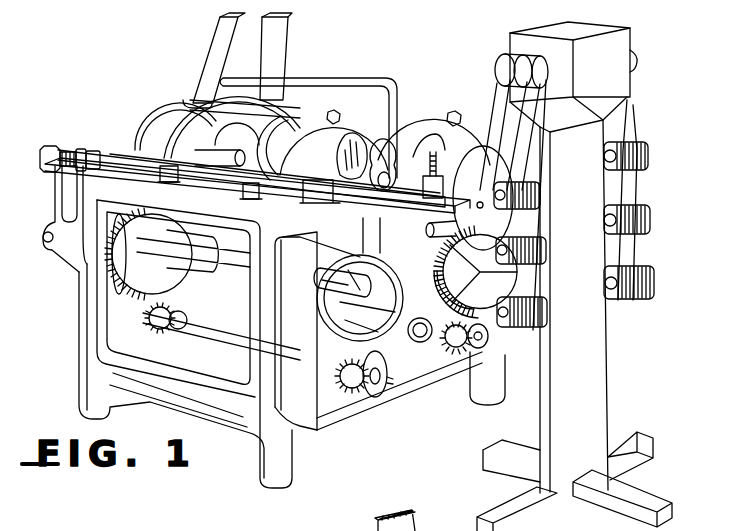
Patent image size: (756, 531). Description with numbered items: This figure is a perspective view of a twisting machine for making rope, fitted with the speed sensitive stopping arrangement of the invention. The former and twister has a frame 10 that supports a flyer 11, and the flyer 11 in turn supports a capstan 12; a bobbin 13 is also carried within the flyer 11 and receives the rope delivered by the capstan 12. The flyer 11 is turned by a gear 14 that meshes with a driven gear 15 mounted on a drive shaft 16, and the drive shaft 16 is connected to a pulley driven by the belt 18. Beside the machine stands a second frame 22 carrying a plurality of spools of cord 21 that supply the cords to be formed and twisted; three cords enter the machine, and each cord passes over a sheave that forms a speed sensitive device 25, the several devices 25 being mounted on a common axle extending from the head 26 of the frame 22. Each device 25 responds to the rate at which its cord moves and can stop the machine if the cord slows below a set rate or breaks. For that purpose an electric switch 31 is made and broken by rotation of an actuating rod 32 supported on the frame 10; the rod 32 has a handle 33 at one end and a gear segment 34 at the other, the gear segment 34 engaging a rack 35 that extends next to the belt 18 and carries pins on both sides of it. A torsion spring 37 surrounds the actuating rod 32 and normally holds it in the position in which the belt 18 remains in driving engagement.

The frame 10 is at (104, 157).
The flyer 11 is at (346, 108).
The capstan 12 is at (290, 128).
The bobbin 13 is at (237, 158).
The gear 14 is at (437, 288).
The driven gear 15 is at (345, 391).
The drive shaft 16 is at (240, 343).
The belt 18 is at (218, 61).
The spools of cord 21 is at (648, 270).
The frame 22 is at (604, 328).
The speed sensitive device 25 is at (498, 58).
The head 26 is at (512, 34).
The electric switch 31 is at (252, 200).
The actuating rod 32 is at (121, 160).
The handle 33 is at (340, 148).
The gear segment 34 is at (46, 160).
The rack 35 is at (53, 219).
The torsion spring 37 is at (167, 183).